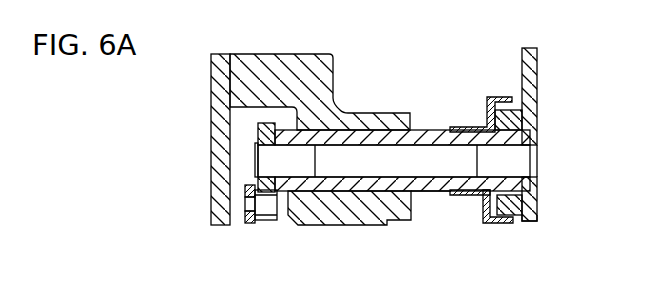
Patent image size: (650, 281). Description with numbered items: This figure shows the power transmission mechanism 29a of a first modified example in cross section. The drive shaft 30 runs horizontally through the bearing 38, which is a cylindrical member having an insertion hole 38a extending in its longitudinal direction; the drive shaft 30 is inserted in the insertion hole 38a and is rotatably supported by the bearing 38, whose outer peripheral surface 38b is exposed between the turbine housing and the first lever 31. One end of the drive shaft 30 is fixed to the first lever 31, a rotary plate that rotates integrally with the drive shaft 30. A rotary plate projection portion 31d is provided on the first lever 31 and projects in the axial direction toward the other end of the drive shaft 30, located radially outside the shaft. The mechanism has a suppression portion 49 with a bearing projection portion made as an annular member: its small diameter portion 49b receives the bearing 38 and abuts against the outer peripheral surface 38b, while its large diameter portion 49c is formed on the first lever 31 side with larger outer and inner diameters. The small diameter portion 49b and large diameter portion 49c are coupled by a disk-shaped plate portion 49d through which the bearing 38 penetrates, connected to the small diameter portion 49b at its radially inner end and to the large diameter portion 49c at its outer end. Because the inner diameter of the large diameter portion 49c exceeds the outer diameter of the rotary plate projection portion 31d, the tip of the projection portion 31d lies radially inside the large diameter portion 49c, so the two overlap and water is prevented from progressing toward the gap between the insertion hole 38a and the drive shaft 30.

The power transmission mechanism 29a is at (370, 33).
The drive shaft 30 is at (383, 158).
The first lever 31 is at (537, 48).
The rotary plate projection portion 31d is at (516, 221).
The bearing 38 is at (283, 186).
The insertion hole 38a is at (381, 172).
The outer peripheral surface 38b is at (437, 185).
The suppression portion 49 is at (510, 96).
The small diameter portion 49b is at (450, 196).
The large diameter portion 49c is at (487, 223).
The plate portion 49d is at (490, 203).